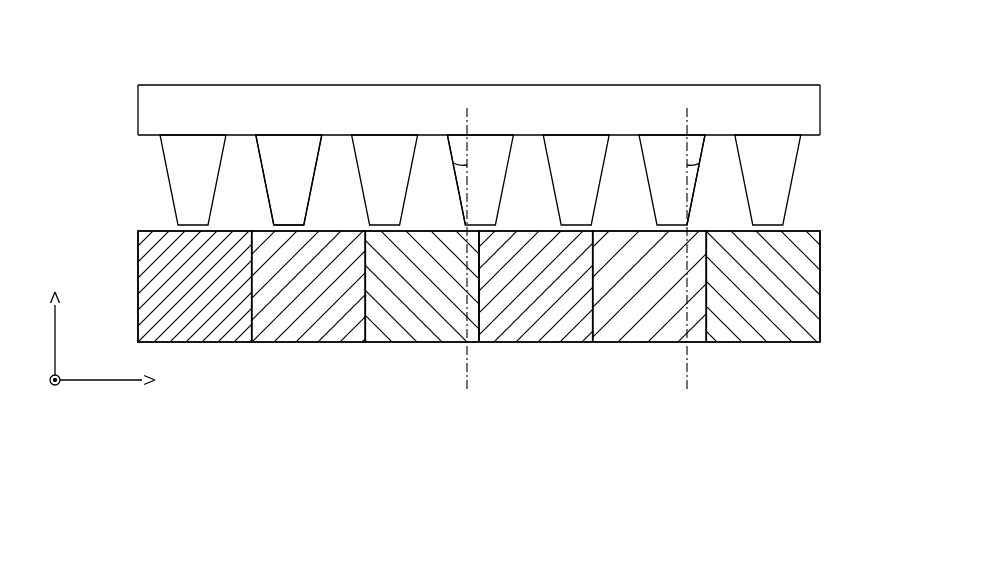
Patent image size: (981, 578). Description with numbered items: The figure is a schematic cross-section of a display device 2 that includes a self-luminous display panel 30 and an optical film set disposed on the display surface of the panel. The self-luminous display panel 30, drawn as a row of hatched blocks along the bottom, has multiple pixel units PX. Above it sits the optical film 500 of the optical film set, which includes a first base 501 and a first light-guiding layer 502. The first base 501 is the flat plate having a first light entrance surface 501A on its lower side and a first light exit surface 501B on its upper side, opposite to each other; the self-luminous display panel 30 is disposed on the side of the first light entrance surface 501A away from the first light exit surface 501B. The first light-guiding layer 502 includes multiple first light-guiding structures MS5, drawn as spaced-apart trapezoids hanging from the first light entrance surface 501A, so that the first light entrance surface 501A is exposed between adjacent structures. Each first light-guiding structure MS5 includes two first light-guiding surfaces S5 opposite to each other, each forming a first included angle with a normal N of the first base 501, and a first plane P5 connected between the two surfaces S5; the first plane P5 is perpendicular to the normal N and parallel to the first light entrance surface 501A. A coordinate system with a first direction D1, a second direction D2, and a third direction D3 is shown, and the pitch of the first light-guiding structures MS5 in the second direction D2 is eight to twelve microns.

The optical film 500 is at (70, 1).
The first base 501 is at (146, 110).
The first light-guiding layer 502 is at (176, 176).
The first light entrance surface 501A is at (784, 131).
The first light exit surface 501B is at (784, 83).
The first light-guiding structure MS5 is at (786, 179).
The first light-guiding surface S5 is at (266, 191).
The first plane P5 is at (290, 222).
The pixel unit PX is at (812, 294).
The self-luminous display panel 30 is at (479, 286).
The normal N is at (470, 365).
The first direction D1 is at (45, 395).
The second direction D2 is at (117, 381).
The third direction D3 is at (57, 325).
The display device 2 is at (853, 415).